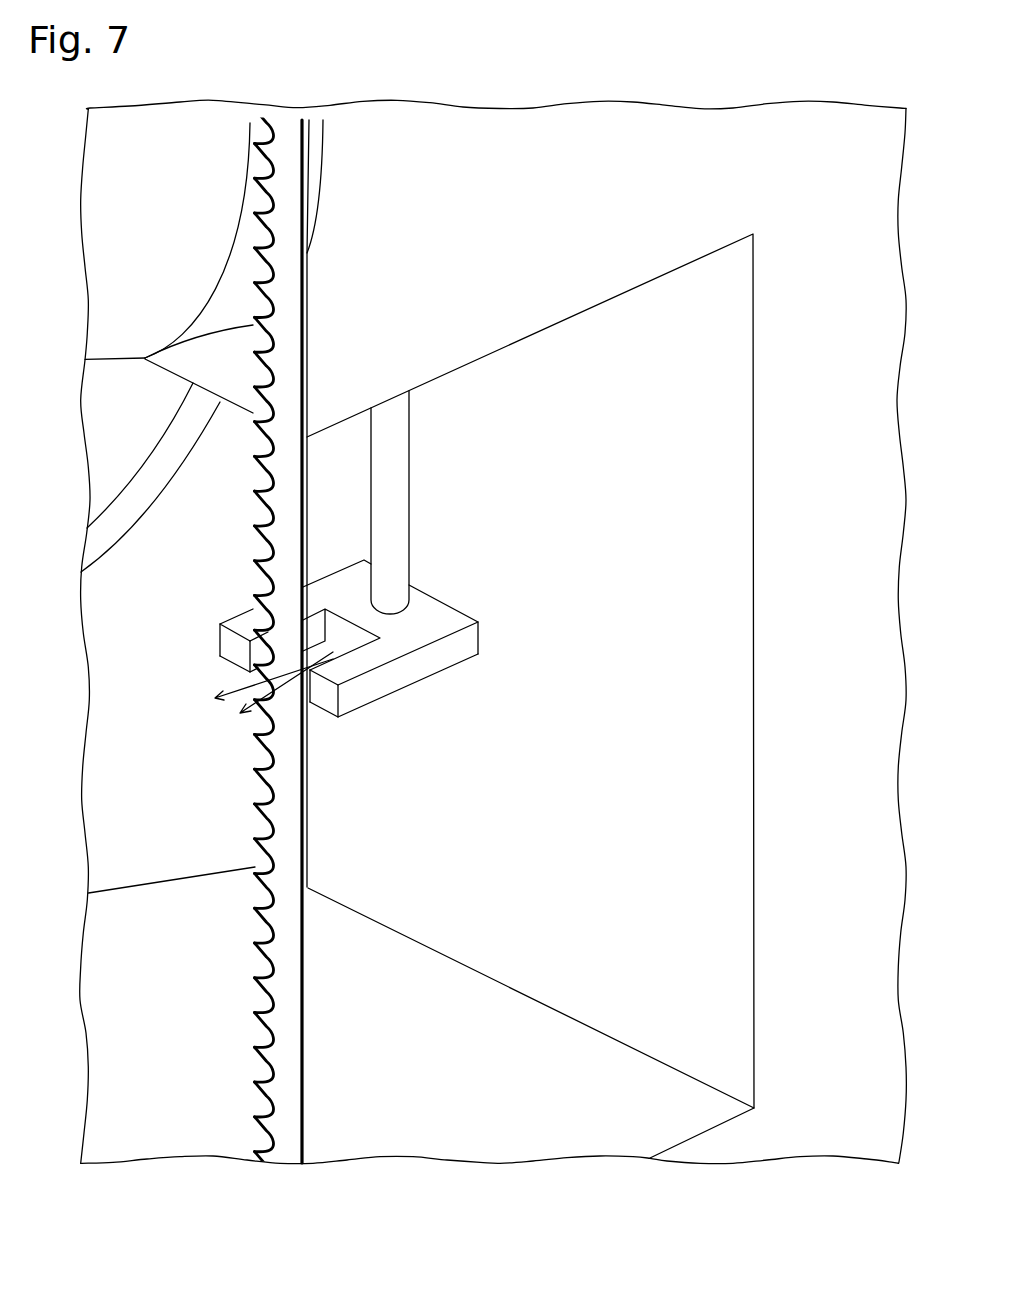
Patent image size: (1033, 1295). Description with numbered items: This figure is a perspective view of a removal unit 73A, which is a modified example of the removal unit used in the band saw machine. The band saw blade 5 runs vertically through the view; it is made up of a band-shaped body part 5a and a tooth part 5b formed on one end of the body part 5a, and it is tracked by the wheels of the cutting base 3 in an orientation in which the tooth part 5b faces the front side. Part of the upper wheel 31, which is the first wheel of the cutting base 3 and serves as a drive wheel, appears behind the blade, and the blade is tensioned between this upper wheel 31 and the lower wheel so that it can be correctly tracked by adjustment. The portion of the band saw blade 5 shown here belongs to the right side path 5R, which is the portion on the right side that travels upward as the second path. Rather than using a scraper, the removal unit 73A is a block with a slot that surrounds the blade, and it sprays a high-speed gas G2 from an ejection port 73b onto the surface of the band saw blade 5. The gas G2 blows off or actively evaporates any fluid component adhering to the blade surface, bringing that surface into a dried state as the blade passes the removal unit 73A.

The cutting base 3 is at (847, 607).
The band saw blade 5 is at (272, 648).
The body part 5a is at (283, 825).
The tooth part 5b is at (243, 823).
The right side path 5R is at (331, 952).
The upper wheel 31 is at (98, 340).
The removal unit 73A is at (412, 672).
The ejection port 73b is at (344, 632).
The high-speed gas G2 is at (293, 710).